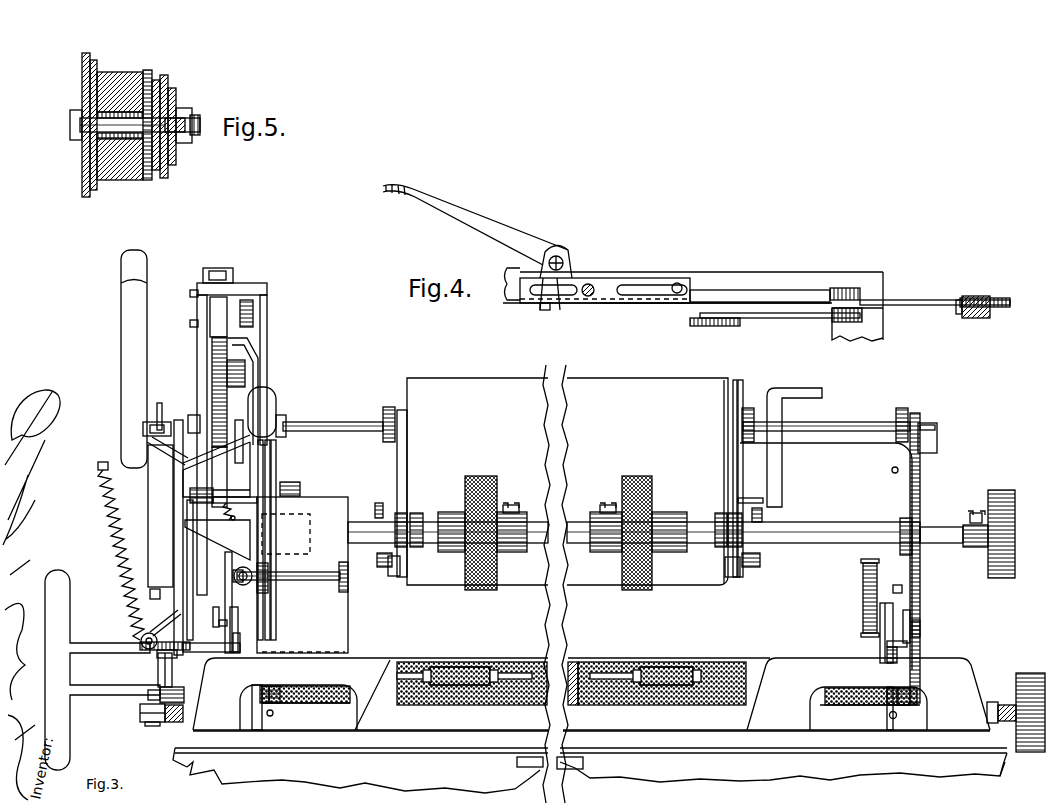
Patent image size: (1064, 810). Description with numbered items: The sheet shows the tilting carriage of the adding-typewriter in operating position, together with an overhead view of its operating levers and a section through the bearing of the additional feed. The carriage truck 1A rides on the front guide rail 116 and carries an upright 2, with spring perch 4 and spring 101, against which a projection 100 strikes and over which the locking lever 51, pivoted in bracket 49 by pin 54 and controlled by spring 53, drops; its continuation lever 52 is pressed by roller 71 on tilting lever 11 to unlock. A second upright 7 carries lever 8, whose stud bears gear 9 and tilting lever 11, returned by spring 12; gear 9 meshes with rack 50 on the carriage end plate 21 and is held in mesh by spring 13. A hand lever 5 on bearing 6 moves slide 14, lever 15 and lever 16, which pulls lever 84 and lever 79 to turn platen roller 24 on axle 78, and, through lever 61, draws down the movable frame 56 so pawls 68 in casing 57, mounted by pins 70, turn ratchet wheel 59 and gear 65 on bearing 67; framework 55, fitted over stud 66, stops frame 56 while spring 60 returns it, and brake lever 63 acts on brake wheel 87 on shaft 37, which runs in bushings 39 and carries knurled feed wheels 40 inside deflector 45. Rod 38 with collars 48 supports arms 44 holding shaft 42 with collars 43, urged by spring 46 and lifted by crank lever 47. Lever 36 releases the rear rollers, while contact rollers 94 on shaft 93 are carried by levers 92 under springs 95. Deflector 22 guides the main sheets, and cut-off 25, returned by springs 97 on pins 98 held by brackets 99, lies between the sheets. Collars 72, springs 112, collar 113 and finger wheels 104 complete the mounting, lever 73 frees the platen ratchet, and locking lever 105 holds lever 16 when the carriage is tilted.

In FIG. 4, the carriage truck 1A is at (503, 283).
In FIG. 3, the carriage truck 1A is at (182, 741).
In FIG. 3, the upright 2 is at (345, 615).
In FIG. 3, the spring perch 4 is at (348, 576).
In FIG. 4, the hand lever 5 is at (478, 226).
In FIG. 3, the hand lever 5 is at (112, 686).
In FIG. 4, the bearing 6 is at (556, 255).
In FIG. 3, the bearing 6 is at (160, 690).
In FIG. 3, the second upright 7 is at (160, 622).
In FIG. 3, the lever 8 is at (174, 611).
In FIG. 3, the gear 9 is at (148, 596).
In FIG. 3, the tilting lever 11 is at (123, 304).
In FIG. 3, the spring 12 is at (120, 562).
In FIG. 3, the spring 13 is at (141, 640).
In FIG. 4, the slide 14 is at (528, 292).
In FIG. 3, the slide 14 is at (233, 627).
In FIG. 4, the lever 15 is at (605, 297).
In FIG. 3, the lever 15 is at (216, 609).
In FIG. 4, the lever 16 is at (920, 300).
In FIG. 3, the lever 16 is at (226, 583).
In FIG. 5, the carriage end plate 21 is at (161, 179).
In FIG. 3, the inside deflector 22 is at (553, 777).
In FIG. 3, the platen roller 24 is at (510, 672).
In FIG. 3, the cut-off 25 is at (740, 683).
In FIG. 3, the lever 36 is at (922, 498).
In FIG. 3, the shaft 37 is at (830, 531).
In FIG. 3, the rod 38 is at (336, 423).
In FIG. 3, the bushings 39 is at (415, 548).
In FIG. 3, the knurled feed wheels 40 is at (478, 478).
In FIG. 3, the shaft 42 is at (380, 567).
In FIG. 3, the collars 43 is at (394, 577).
In FIG. 3, the arms 44 is at (400, 471).
In FIG. 3, the sheet deflector 45 is at (614, 385).
In FIG. 3, the spring 46 is at (375, 511).
In FIG. 3, the crank-shaped lever 47 is at (822, 394).
In FIG. 3, the collars 48 is at (388, 420).
In FIG. 3, the bracket 49 is at (173, 416).
In FIG. 3, the rack 50 is at (157, 537).
In FIG. 3, the locking lever 51 is at (262, 503).
In FIG. 3, the lever 52 is at (155, 408).
In FIG. 3, the spring 53 is at (226, 518).
In FIG. 3, the pin 54 is at (205, 503).
In FIG. 5, the U-shaped framework 55 is at (166, 166).
In FIG. 3, the U-shaped framework 55 is at (265, 291).
In FIG. 5, the movable frame 56 is at (95, 192).
In FIG. 3, the movable frame 56 is at (205, 272).
In FIG. 3, the casing 57 is at (218, 322).
In FIG. 5, the ratchet wheel 59 is at (110, 73).
In FIG. 3, the ratchet wheel 59 is at (218, 383).
In FIG. 3, the spring 60 is at (252, 313).
In FIG. 4, the lever 61 is at (963, 312).
In FIG. 5, the brake lever 63 is at (177, 160).
In FIG. 3, the brake lever 63 is at (271, 476).
In FIG. 5, the gear 65 is at (139, 72).
In FIG. 3, the gear 65 is at (247, 376).
In FIG. 3, the stud 66 is at (212, 548).
In FIG. 5, the bearing 67 is at (76, 118).
In FIG. 3, the bearing 67 is at (190, 424).
In FIG. 3, the pawls 68 is at (215, 340).
In FIG. 3, the pins 70 is at (192, 323).
In FIG. 3, the roller 71 is at (150, 432).
In FIG. 3, the collars 72 is at (992, 702).
In FIG. 3, the lever 73 is at (273, 396).
In FIG. 3, the platen roller axle 78 is at (140, 715).
In FIG. 4, the lever 79 is at (705, 326).
In FIG. 4, the lever 84 is at (757, 318).
In FIG. 3, the brake wheel 87 is at (300, 490).
In FIG. 3, the supporting levers 92 is at (881, 638).
In FIG. 3, the shaft 93 is at (620, 672).
In FIG. 3, the contact rollers 94 is at (683, 667).
In FIG. 3, the springs 95 is at (863, 597).
In FIG. 3, the springs 97 is at (900, 652).
In FIG. 3, the pins 98 is at (919, 637).
In FIG. 3, the brackets 99 is at (912, 616).
In FIG. 3, the projection 100 is at (310, 530).
In FIG. 3, the spring 101 is at (245, 586).
In FIG. 3, the finger wheels 104 is at (992, 562).
In FIG. 3, the L-shaped locking lever 105 is at (190, 603).
In FIG. 3, the springs 112 is at (172, 722).
In FIG. 3, the collar 113 is at (150, 723).
In FIG. 3, the front guide rail 116 is at (196, 765).